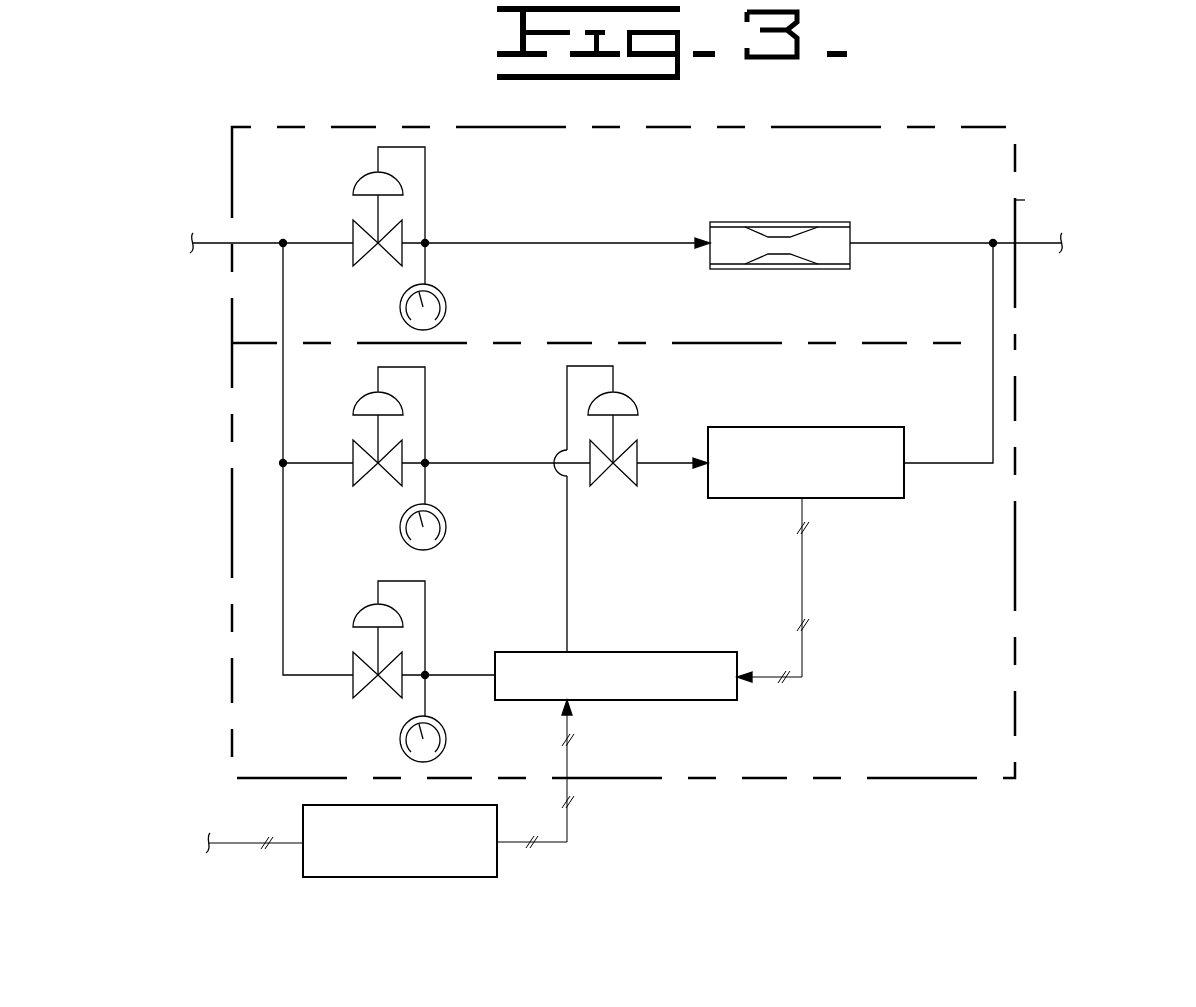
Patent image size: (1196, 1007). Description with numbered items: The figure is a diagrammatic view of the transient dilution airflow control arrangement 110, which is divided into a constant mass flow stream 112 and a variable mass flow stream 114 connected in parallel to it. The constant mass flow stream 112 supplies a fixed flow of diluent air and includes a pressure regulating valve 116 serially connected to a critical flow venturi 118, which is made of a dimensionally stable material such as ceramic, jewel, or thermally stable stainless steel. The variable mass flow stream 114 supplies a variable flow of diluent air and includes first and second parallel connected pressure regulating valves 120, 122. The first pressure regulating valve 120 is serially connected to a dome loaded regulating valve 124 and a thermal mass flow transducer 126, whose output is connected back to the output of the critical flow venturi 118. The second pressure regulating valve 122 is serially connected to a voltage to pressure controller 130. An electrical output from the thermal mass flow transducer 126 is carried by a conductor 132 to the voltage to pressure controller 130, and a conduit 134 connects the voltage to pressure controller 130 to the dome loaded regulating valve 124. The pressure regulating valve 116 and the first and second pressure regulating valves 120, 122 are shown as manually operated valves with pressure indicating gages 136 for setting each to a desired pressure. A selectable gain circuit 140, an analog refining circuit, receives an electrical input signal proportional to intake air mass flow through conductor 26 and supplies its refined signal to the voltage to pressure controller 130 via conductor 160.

The conductor 26 is at (233, 843).
The transient dilution airflow control arrangement 110 is at (670, 504).
The constant mass flow stream 112 is at (1025, 200).
The variable mass flow stream 114 is at (1015, 495).
The pressure regulating valve 116 is at (375, 221).
The critical flow venturi 118 is at (796, 222).
The first pressure regulating valve 120 is at (375, 440).
The second pressure regulating valve 122 is at (375, 650).
The dome loaded regulating valve 124 is at (620, 438).
The thermal mass flow transducer 126 is at (905, 483).
The voltage to pressure controller 130 is at (615, 700).
The conductor 132 is at (803, 572).
The conduit 134 is at (568, 572).
The pressure indicating gage 136 is at (446, 305).
The selectable gain circuit 140 is at (498, 855).
The conductor 160 is at (568, 830).